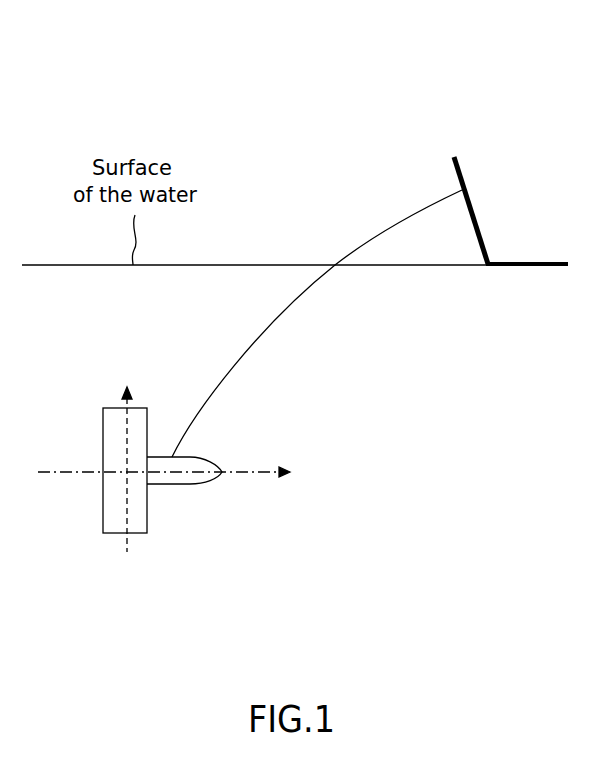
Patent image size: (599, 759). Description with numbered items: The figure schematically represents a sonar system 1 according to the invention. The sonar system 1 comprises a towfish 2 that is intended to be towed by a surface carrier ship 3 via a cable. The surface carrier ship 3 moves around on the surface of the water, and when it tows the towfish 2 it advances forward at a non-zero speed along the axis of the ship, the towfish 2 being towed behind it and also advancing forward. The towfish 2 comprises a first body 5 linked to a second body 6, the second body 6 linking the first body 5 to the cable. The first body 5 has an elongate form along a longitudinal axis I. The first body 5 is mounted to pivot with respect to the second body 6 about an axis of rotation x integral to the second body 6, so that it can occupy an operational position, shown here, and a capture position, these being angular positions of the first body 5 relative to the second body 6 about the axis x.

The sonar system 1 is at (202, 82).
The towfish 2 is at (123, 378).
The surface carrier ship 3 is at (452, 158).
The first body 5 is at (103, 408).
The second body 6 is at (183, 485).